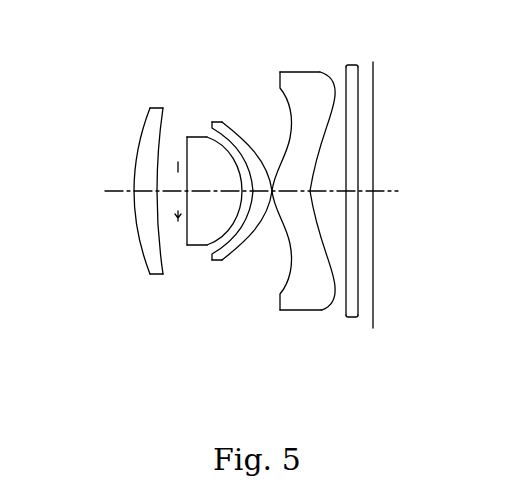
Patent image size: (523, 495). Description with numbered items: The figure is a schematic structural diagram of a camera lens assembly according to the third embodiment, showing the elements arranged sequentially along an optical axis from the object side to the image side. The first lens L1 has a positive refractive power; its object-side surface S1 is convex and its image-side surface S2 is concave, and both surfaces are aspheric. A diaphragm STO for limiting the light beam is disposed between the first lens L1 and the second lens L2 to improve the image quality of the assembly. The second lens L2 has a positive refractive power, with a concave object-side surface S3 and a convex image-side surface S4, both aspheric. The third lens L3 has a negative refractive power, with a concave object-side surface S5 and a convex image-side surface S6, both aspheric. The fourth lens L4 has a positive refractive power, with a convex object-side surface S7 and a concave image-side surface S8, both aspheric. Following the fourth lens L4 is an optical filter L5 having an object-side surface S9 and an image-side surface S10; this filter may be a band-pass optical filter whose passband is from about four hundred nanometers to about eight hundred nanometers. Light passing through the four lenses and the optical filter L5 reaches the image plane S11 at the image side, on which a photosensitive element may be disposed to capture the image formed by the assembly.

The first lens L1 is at (97, 194).
The second lens L2 is at (175, 194).
The third lens L3 is at (239, 194).
The fourth lens L4 is at (326, 194).
The optical filter L5 is at (406, 194).
The diaphragm STO is at (169, 167).
The object-side surface of the first lens S1 is at (127, 191).
The image-side surface of the first lens S2 is at (155, 191).
The object-side surface of the second lens S3 is at (187, 191).
The image-side surface of the second lens S4 is at (242, 191).
The object-side surface of the third lens S5 is at (253, 191).
The image-side surface of the third lens S6 is at (272, 191).
The object-side surface of the fourth lens S7 is at (272, 191).
The image-side surface of the fourth lens S8 is at (310, 191).
The object-side surface of the optical filter S9 is at (346, 191).
The image-side surface of the optical filter S10 is at (358, 191).
The image plane S11 is at (373, 191).